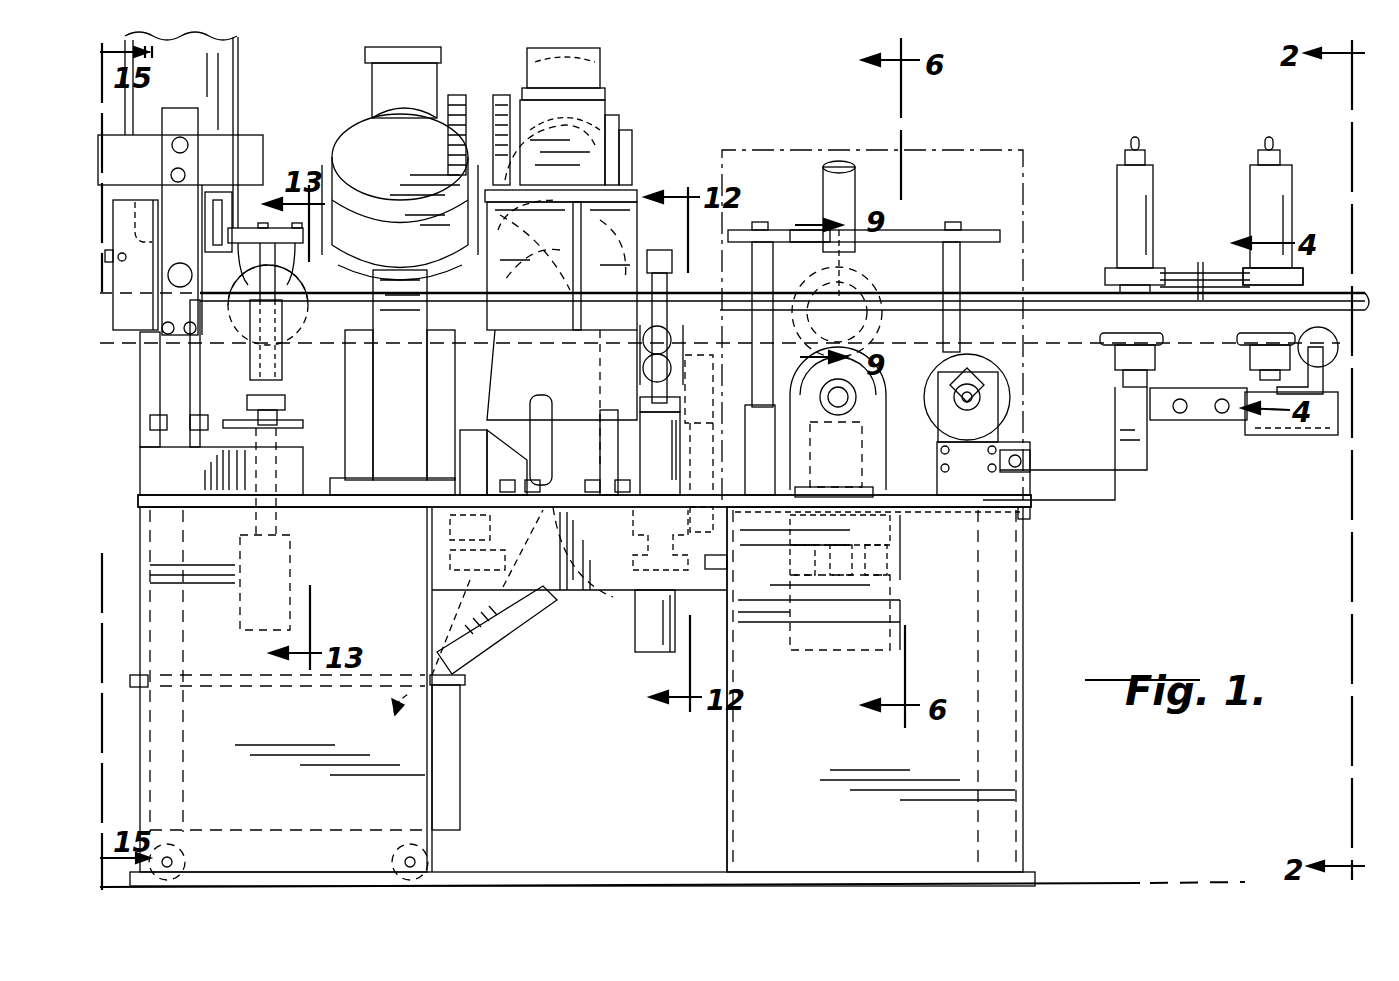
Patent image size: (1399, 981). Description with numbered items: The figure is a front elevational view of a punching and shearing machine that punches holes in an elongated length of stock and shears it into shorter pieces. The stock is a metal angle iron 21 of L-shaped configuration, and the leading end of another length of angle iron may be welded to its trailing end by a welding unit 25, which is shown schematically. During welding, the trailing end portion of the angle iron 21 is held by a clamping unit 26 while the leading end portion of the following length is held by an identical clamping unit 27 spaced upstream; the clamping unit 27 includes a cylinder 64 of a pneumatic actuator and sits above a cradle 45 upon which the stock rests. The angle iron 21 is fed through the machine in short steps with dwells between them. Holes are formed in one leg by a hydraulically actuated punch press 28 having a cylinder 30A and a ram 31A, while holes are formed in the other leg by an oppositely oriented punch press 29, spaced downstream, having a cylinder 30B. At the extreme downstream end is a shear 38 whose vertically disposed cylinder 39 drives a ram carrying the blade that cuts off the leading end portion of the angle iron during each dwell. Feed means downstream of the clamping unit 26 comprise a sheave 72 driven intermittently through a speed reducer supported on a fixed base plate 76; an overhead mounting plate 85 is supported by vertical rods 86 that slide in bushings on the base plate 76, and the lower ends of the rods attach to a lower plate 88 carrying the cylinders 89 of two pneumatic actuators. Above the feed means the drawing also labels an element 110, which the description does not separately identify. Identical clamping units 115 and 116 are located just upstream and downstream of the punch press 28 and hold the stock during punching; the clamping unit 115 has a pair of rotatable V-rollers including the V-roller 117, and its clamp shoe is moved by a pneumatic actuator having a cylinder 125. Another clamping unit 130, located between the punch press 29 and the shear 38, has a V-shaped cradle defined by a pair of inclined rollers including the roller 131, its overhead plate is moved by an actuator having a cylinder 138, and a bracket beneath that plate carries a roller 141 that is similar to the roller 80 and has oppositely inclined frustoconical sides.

The shear 38 is at (240, 50).
The cylinder 39 is at (218, 92).
The punch press 29 is at (370, 94).
The cylinder 30B is at (368, 132).
The punch press 28 is at (612, 86).
The cylinder 30A is at (602, 105).
The roller 141 is at (306, 278).
The clamping unit 130 is at (285, 322).
The roller 131 is at (283, 368).
The cylinder 138 is at (296, 593).
The clamping unit 116 is at (450, 365).
The ram 31A is at (562, 407).
The clamping unit 115 is at (680, 325).
The V-roller 117 is at (645, 378).
The cylinder 125 is at (635, 624).
The cylinder 110 is at (823, 184).
The overhead mounting plate 85 is at (900, 230).
The vertical rods 86 is at (752, 263).
The roller 80 is at (860, 297).
The sheave 72 is at (897, 368).
The base plate 76 is at (980, 510).
The lower plate 88 is at (913, 582).
The cylinders 89 is at (825, 660).
The angle iron 21 is at (1052, 290).
The clamping unit 26 is at (1157, 182).
The clamping unit 27 is at (1296, 170).
The cylinder 64 is at (1252, 193).
The welding unit 25 is at (1185, 273).
The cradle 45 is at (1243, 362).